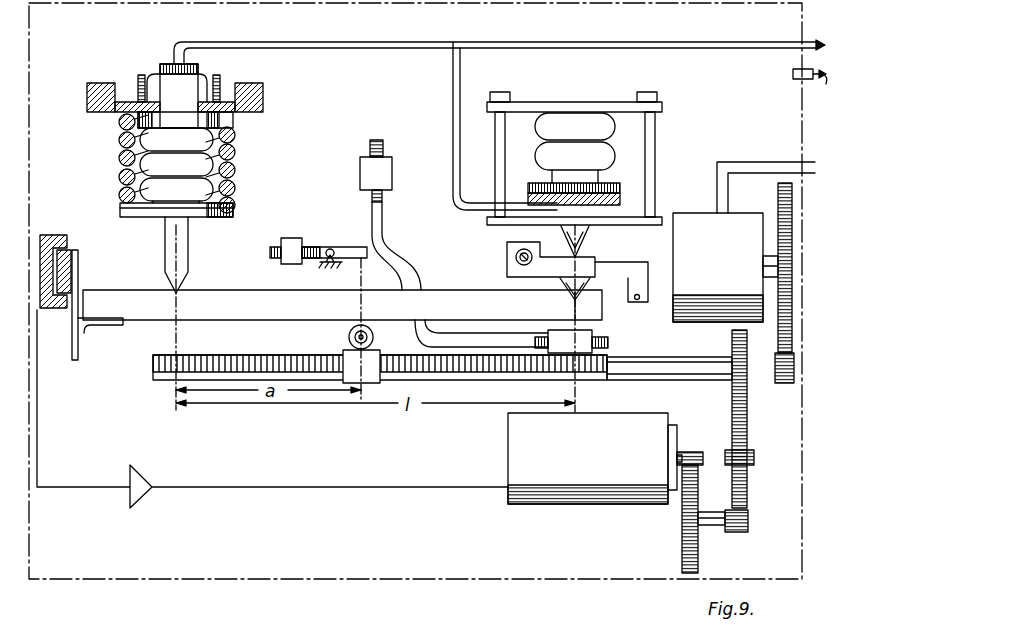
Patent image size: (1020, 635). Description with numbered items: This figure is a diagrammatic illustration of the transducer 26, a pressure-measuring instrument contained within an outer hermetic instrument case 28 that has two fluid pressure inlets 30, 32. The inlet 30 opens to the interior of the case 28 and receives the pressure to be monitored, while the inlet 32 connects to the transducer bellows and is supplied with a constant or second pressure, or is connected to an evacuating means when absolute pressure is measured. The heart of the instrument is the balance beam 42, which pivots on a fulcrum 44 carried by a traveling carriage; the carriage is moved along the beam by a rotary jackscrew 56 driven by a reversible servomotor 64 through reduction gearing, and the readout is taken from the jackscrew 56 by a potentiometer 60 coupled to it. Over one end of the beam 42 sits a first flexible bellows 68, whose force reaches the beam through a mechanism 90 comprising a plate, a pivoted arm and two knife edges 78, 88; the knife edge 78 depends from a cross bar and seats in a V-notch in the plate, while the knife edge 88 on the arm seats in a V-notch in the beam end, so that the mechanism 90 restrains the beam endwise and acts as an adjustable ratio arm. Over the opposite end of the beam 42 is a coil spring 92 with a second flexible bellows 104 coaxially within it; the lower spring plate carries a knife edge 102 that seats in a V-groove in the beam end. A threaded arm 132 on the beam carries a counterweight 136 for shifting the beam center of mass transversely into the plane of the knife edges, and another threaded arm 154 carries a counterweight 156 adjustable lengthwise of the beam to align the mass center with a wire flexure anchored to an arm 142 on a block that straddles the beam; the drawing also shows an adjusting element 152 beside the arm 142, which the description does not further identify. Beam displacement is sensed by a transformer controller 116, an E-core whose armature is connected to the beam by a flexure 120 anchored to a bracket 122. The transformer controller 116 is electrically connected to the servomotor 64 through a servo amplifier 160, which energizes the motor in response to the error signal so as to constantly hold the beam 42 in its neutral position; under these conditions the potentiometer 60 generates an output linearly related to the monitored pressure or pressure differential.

The transducer 26 is at (199, 237).
The instrument case 28 is at (399, 579).
The fluid pressure inlet 30 is at (803, 78).
The fluid pressure inlet 32 is at (803, 48).
The balance beam 42 is at (297, 317).
The fulcrum 44 is at (349, 338).
The jackscrew 56 is at (261, 355).
The potentiometer 60 is at (724, 266).
The servomotor 64 is at (591, 464).
The first flexible bellows 68 is at (604, 159).
The knife edge 78 is at (581, 256).
The knife edge 88 is at (571, 291).
The mechanism 90 is at (497, 279).
The coil spring 92 is at (231, 152).
The knife edge 102 is at (181, 290).
The second flexible bellows 104 is at (206, 178).
The transformer controller 116 is at (80, 215).
The flexure 120 is at (70, 299).
The bracket 122 is at (87, 335).
The threaded arm 132 is at (383, 208).
The counterweight 136 is at (386, 168).
The arm 142 is at (352, 247).
The adjusting screw 152 is at (296, 238).
The threaded arm 154 is at (495, 337).
The counterweight 156 is at (584, 340).
The servo amplifier 160 is at (146, 479).